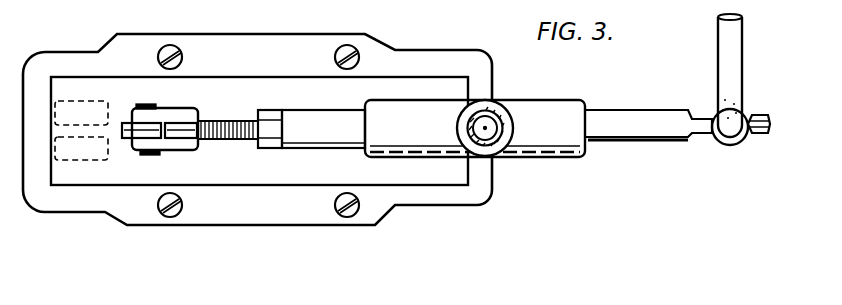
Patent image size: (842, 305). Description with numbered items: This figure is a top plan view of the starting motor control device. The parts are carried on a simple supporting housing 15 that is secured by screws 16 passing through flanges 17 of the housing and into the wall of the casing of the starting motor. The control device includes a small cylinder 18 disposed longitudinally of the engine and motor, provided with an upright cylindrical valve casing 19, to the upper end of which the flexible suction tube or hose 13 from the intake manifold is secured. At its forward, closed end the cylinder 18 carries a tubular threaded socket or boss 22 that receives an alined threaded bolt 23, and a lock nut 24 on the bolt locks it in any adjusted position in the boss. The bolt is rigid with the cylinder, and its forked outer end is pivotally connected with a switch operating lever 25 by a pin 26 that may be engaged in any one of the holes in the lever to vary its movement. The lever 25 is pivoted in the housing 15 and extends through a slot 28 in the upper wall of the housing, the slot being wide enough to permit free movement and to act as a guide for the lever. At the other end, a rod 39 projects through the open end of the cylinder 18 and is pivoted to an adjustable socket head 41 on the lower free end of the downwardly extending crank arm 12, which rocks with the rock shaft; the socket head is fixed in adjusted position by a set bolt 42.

The crank arm 12 is at (742, 72).
The flexible suction tube 13 is at (490, 115).
The supporting housing 15 is at (432, 180).
The screws 16 is at (168, 216).
The flanges 17 is at (277, 212).
The cylinder 18 is at (572, 158).
The valve casing 19 is at (503, 158).
The threaded boss 22 is at (352, 142).
The threaded bolt 23 is at (247, 142).
The lock nut 24 is at (275, 146).
The switch operating lever 25 is at (187, 130).
The pin 26 is at (140, 157).
The slot 28 is at (127, 122).
The rod 39 is at (673, 133).
The socket head 41 is at (740, 141).
The set bolt 42 is at (758, 115).